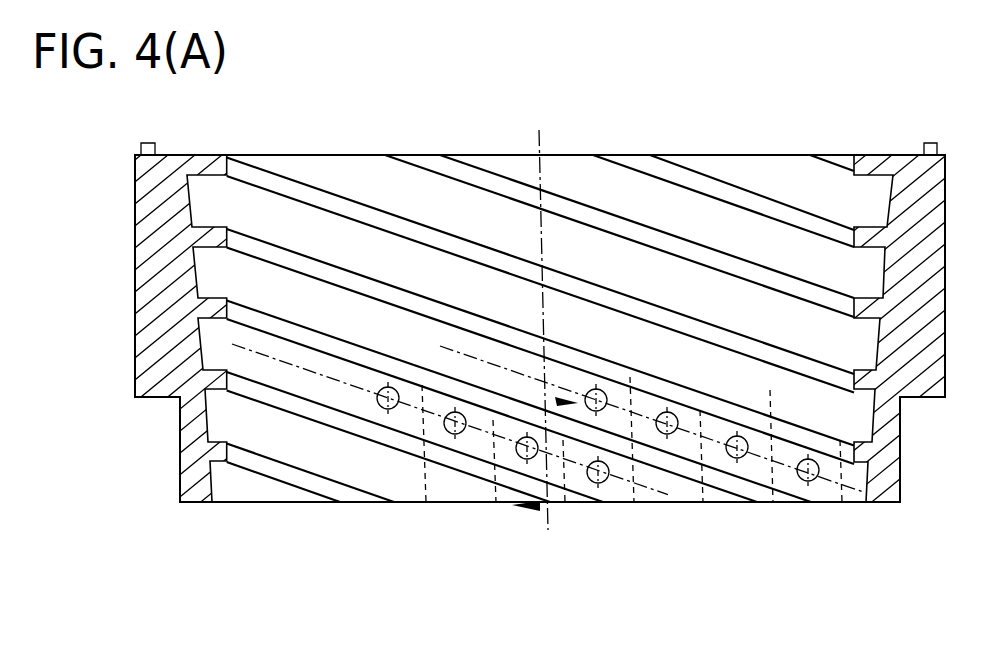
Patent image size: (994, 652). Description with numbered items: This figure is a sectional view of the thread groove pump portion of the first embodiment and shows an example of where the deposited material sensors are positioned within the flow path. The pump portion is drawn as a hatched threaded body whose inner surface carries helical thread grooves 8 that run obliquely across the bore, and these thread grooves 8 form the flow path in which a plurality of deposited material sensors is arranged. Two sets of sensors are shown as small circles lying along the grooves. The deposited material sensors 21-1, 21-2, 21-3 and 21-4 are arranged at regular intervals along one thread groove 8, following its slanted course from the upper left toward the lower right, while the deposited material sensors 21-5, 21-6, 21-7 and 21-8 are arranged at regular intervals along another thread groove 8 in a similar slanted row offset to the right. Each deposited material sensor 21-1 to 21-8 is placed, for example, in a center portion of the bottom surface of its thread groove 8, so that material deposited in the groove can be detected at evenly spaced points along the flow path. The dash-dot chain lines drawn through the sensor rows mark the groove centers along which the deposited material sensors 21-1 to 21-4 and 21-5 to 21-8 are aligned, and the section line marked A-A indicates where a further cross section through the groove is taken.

The thread groove 8 is at (320, 386).
The deposited material sensor 21-1 is at (393, 408).
The deposited material sensor 21-2 is at (459, 433).
The deposited material sensor 21-3 is at (531, 458).
The deposited material sensor 21-4 is at (601, 482).
The deposited material sensor 21-5 is at (603, 409).
The deposited material sensor 21-6 is at (672, 433).
The deposited material sensor 21-7 is at (741, 457).
The deposited material sensor 21-8 is at (812, 481).